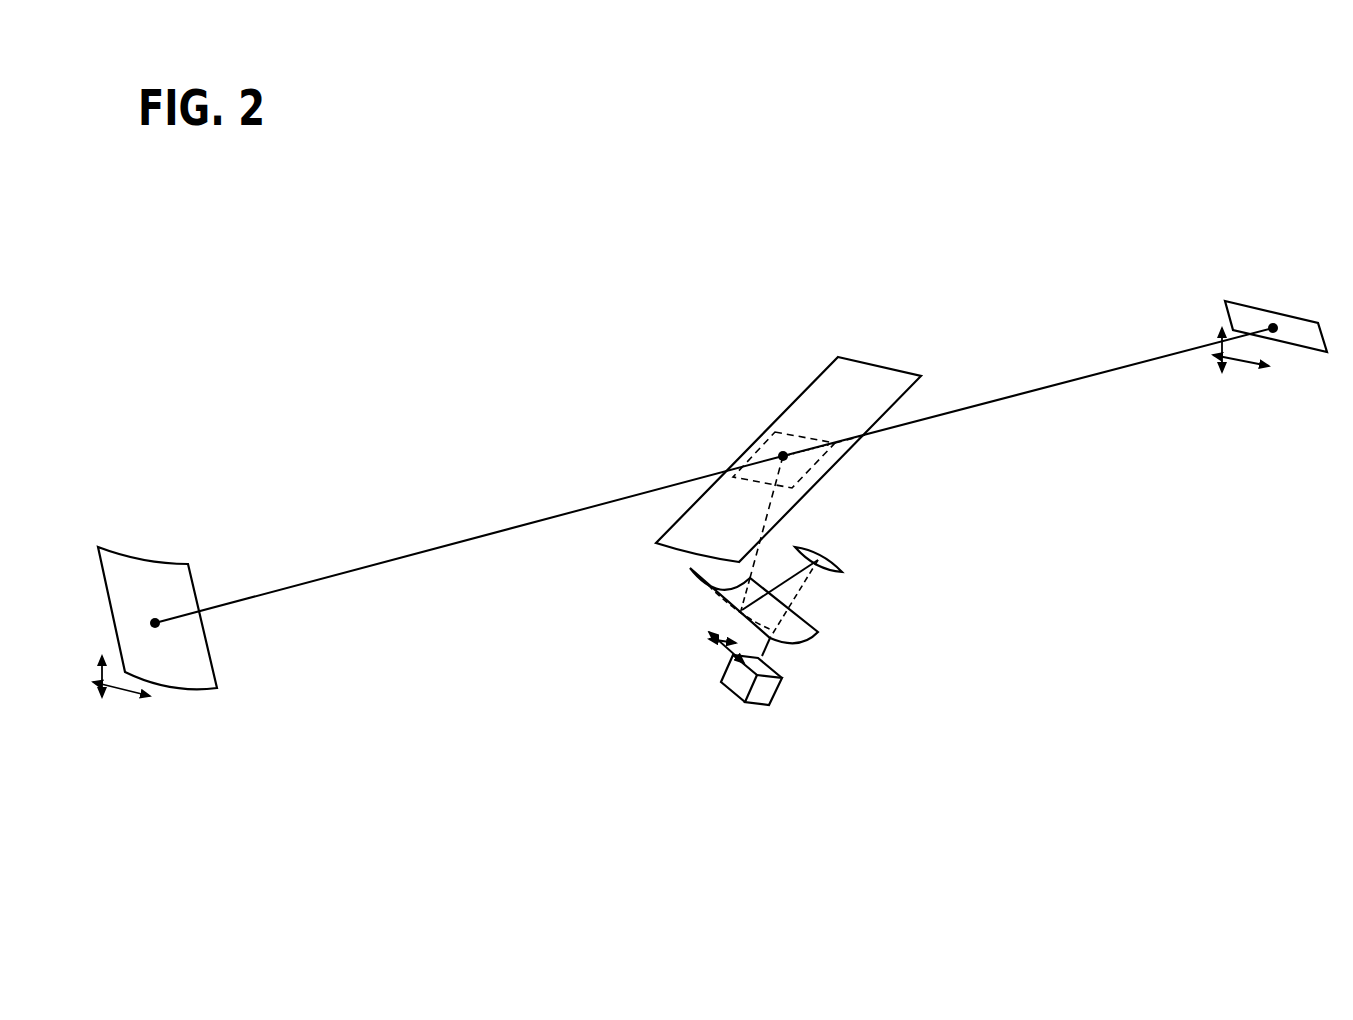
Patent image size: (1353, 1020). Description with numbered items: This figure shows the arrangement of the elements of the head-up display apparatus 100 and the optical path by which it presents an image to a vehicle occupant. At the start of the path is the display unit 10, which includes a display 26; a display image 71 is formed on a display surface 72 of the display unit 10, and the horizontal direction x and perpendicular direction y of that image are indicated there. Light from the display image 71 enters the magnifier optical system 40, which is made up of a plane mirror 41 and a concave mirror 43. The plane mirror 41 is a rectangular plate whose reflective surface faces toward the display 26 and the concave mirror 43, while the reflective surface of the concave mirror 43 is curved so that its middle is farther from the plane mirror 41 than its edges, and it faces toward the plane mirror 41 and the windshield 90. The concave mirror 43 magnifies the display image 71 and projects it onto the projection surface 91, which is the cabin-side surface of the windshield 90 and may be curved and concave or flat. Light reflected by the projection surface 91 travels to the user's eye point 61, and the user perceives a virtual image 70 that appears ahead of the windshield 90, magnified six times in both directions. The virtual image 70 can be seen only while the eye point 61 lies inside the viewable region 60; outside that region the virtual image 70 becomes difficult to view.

The head-up display apparatus 100 is at (673, 680).
The display unit 10 is at (777, 698).
The display 26 is at (766, 658).
The display surface 72 is at (773, 664).
The display image 71 is at (794, 667).
The magnifier optical system 40 is at (906, 552).
The plane mirror 41 is at (823, 554).
The concave mirror 43 is at (812, 620).
The windshield 90 is at (787, 407).
The projection surface 91 is at (808, 472).
The virtual image 70 is at (133, 550).
The viewable region 60 is at (1242, 301).
The eye point 61 is at (1277, 321).